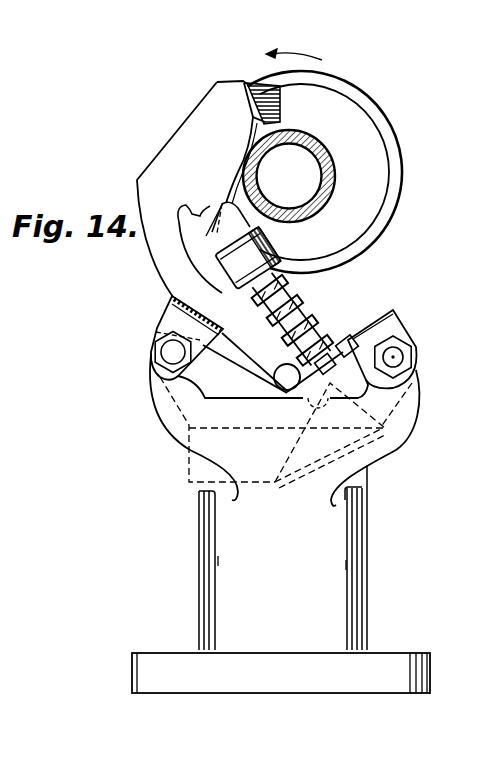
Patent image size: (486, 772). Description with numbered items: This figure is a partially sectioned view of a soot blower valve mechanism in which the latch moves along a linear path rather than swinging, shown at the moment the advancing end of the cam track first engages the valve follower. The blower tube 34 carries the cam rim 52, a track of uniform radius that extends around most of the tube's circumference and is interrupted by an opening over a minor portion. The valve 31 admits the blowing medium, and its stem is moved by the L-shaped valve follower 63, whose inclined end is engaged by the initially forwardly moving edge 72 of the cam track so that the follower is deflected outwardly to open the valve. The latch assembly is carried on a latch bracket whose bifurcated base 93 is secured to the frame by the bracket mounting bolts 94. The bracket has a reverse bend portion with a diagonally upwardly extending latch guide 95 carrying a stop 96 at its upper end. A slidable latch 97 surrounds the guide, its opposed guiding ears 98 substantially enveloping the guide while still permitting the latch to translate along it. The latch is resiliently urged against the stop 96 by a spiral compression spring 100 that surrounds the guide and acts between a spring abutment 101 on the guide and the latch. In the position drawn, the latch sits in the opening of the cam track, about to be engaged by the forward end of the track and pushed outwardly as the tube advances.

The valve 31 is at (340, 550).
The blower tube 34 is at (330, 162).
The cam rim 52 is at (392, 178).
The follower 63 is at (143, 247).
The initially forwardly moving edge of the cam track 72 is at (247, 84).
The bifurcated base 93 is at (228, 370).
The bracket mounting bolts 94 is at (395, 356).
The latch guide 95 is at (298, 300).
The stop 96 is at (219, 237).
The slidable latch 97 is at (280, 250).
The guiding ears 98 is at (243, 270).
The spiral compression spring 100 is at (342, 333).
The spring abutment 101 is at (304, 403).